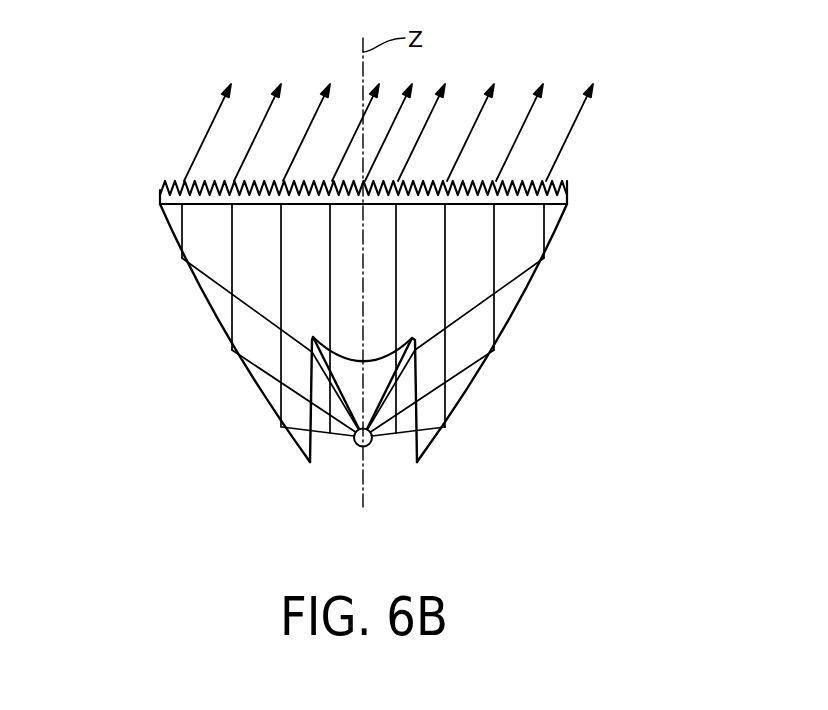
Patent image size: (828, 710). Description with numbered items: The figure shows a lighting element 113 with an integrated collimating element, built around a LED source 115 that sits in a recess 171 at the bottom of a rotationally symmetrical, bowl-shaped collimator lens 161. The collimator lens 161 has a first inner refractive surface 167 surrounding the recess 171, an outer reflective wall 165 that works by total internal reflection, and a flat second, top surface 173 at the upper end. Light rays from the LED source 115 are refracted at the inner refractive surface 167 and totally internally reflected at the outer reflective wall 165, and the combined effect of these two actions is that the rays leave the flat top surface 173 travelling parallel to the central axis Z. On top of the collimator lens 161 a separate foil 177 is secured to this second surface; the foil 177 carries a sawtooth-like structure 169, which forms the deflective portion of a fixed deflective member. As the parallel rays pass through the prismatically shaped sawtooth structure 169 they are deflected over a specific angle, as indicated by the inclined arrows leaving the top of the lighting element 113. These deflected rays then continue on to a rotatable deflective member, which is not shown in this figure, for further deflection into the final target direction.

The lighting element 113 is at (560, 441).
The LED source 115 is at (358, 446).
The collimator lens 161 is at (532, 307).
The outer reflective wall 165 is at (198, 293).
The inner refractive surface 167 is at (363, 361).
The sawtooth-like structure 169 is at (165, 184).
The recess 171 is at (385, 358).
The top surface 173 is at (163, 213).
The foil 177 is at (568, 202).